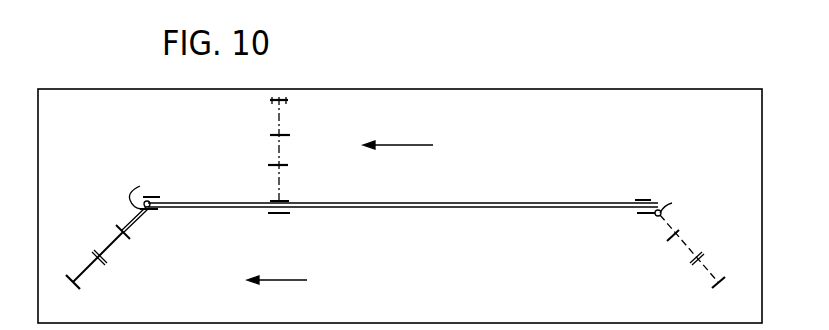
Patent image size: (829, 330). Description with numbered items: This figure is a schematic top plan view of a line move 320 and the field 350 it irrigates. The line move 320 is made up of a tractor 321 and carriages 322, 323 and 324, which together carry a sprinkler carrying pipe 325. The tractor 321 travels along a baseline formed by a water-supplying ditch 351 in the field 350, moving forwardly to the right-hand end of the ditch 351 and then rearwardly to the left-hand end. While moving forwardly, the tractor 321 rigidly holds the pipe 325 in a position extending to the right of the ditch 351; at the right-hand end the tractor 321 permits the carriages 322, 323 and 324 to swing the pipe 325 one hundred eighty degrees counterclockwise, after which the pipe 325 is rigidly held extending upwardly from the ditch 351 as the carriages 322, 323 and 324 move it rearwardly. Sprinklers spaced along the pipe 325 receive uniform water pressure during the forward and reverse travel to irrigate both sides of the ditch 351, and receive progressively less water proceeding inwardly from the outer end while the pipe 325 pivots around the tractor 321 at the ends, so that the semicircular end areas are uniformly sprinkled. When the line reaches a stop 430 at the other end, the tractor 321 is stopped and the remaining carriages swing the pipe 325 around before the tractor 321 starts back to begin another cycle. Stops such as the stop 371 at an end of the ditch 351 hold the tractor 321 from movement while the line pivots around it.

The field 350 is at (532, 89).
The water-supplying ditch 351 is at (496, 194).
The line move 320 is at (272, 152).
The tractor 321 is at (288, 219).
The carriage 322 is at (288, 167).
The carriage 323 is at (292, 137).
The carriage 324 is at (288, 100).
The sprinkler carrying pipe 325 is at (275, 103).
The stop 371 is at (667, 208).
The stop 430 is at (150, 183).